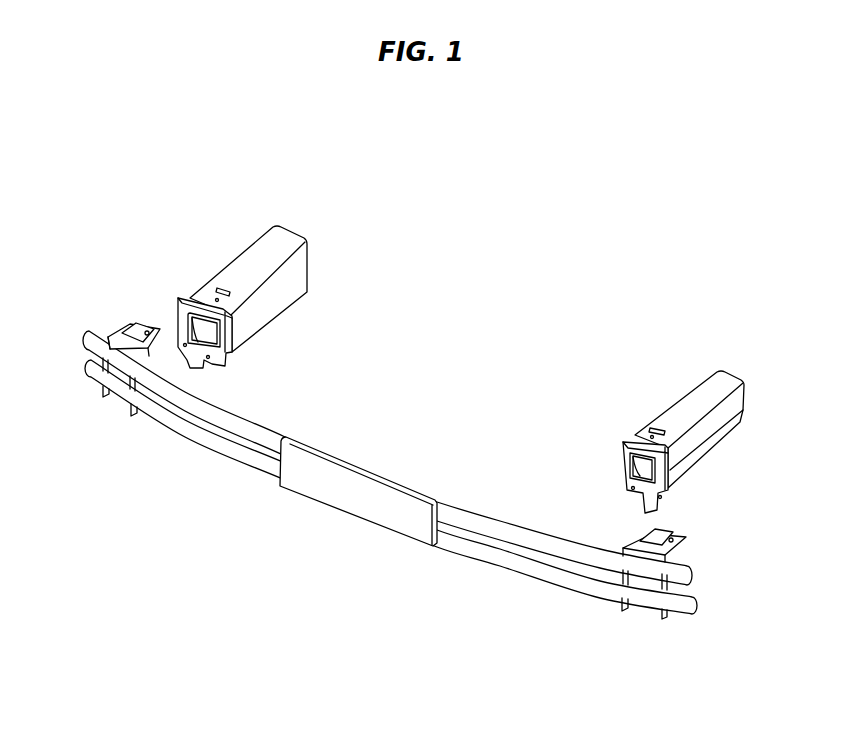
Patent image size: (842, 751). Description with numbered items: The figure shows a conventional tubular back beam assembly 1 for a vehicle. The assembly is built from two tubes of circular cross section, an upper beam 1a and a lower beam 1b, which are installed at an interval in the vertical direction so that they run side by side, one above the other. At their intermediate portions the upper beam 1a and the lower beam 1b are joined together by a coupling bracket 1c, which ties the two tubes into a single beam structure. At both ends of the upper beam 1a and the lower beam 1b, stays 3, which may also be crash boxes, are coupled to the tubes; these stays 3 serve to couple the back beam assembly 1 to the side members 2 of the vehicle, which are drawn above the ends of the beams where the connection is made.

The tubular back beam assembly 1 is at (390, 493).
The upper beam 1a is at (475, 518).
The lower beam 1b is at (521, 567).
The coupling bracket 1c is at (370, 502).
The side member 2 is at (243, 268).
The stay 3 is at (137, 333).